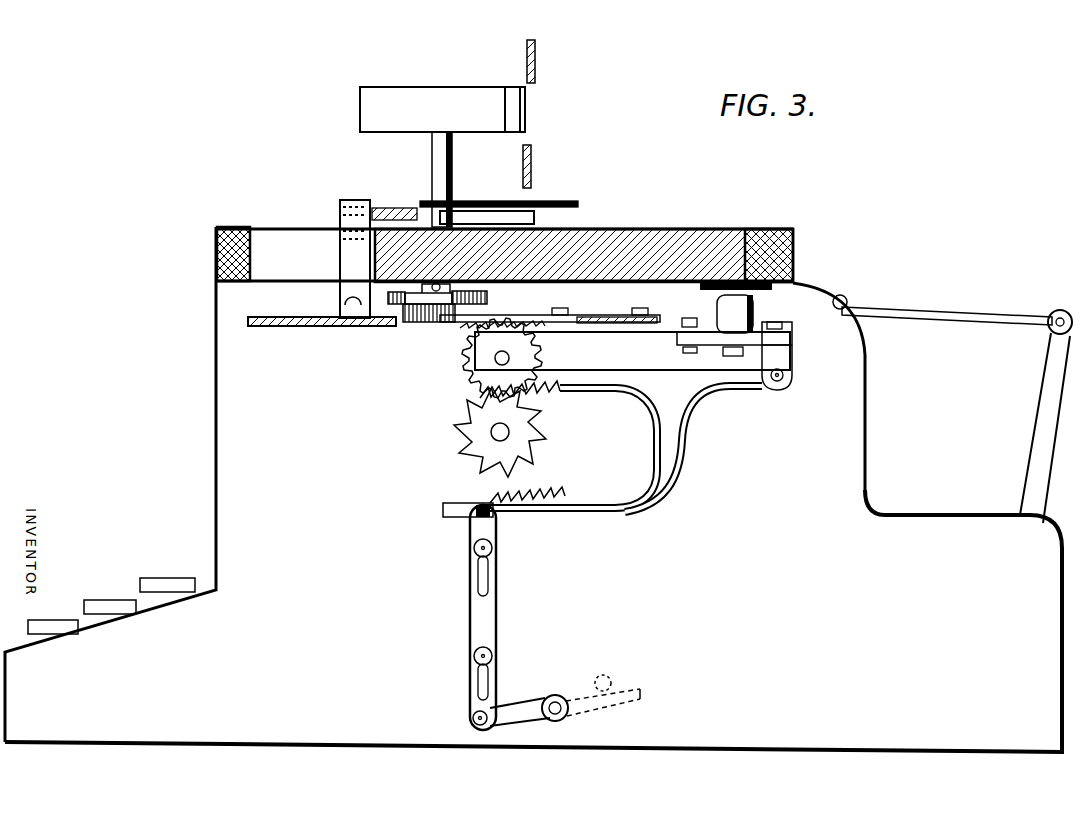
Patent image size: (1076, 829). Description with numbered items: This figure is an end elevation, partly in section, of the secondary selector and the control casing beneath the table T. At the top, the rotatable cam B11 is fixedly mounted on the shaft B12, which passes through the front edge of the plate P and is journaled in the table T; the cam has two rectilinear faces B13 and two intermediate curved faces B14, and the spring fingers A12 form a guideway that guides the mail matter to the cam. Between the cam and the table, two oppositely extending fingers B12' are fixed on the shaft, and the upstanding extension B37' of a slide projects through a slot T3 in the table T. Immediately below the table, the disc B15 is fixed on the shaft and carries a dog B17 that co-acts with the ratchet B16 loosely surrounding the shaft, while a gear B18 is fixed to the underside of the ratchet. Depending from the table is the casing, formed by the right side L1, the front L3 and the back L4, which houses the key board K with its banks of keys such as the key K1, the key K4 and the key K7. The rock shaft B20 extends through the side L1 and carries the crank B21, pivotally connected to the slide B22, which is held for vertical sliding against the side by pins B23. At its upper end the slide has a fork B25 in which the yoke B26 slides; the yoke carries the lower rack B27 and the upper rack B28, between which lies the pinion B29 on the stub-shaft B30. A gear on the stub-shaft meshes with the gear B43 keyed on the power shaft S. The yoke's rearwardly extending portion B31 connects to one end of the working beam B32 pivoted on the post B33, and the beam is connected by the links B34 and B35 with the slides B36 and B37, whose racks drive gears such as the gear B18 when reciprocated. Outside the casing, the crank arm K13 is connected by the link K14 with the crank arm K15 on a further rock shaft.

The table T is at (706, 240).
The slot T3 is at (218, 245).
The right side of casing L1 is at (892, 547).
The front of casing L3 is at (213, 390).
The back of casing L4 is at (866, 407).
The rotatable cam B11 is at (360, 107).
The rectilinear face B13 is at (514, 97).
The curved face B14 is at (430, 100).
The spring finger A12 is at (536, 62).
The shaft B12 is at (419, 179).
The plate P is at (503, 200).
The finger B12' is at (485, 194).
The upstanding extension B37' is at (306, 240).
The disc B15 is at (390, 297).
The ratchet B16 is at (390, 321).
The dog B17 is at (480, 307).
The gear B18 is at (410, 323).
The slide B37 is at (477, 342).
The slide B36 is at (536, 318).
The gear B43 is at (465, 358).
The shaft S is at (512, 359).
The link B34 is at (612, 332).
The working beam B32 is at (782, 342).
The post B33 is at (722, 322).
The link B35 is at (770, 330).
The rearwardly extending portion B31 is at (762, 384).
The yoke B26 is at (686, 420).
The rack B28 is at (580, 396).
The rack B27 is at (490, 499).
The pinion B29 is at (455, 437).
The stub-shaft B30 is at (508, 440).
The fork B25 is at (475, 515).
The slide B22 is at (493, 626).
The pin B23 is at (494, 552).
The crank B21 is at (503, 705).
The rock shaft B20 is at (570, 700).
The key board K is at (87, 556).
The key K1 is at (156, 578).
The key K4 is at (102, 600).
The key K7 is at (48, 620).
The crank arm K13 is at (1053, 310).
The link K14 is at (932, 308).
The crank arm K15 is at (842, 296).